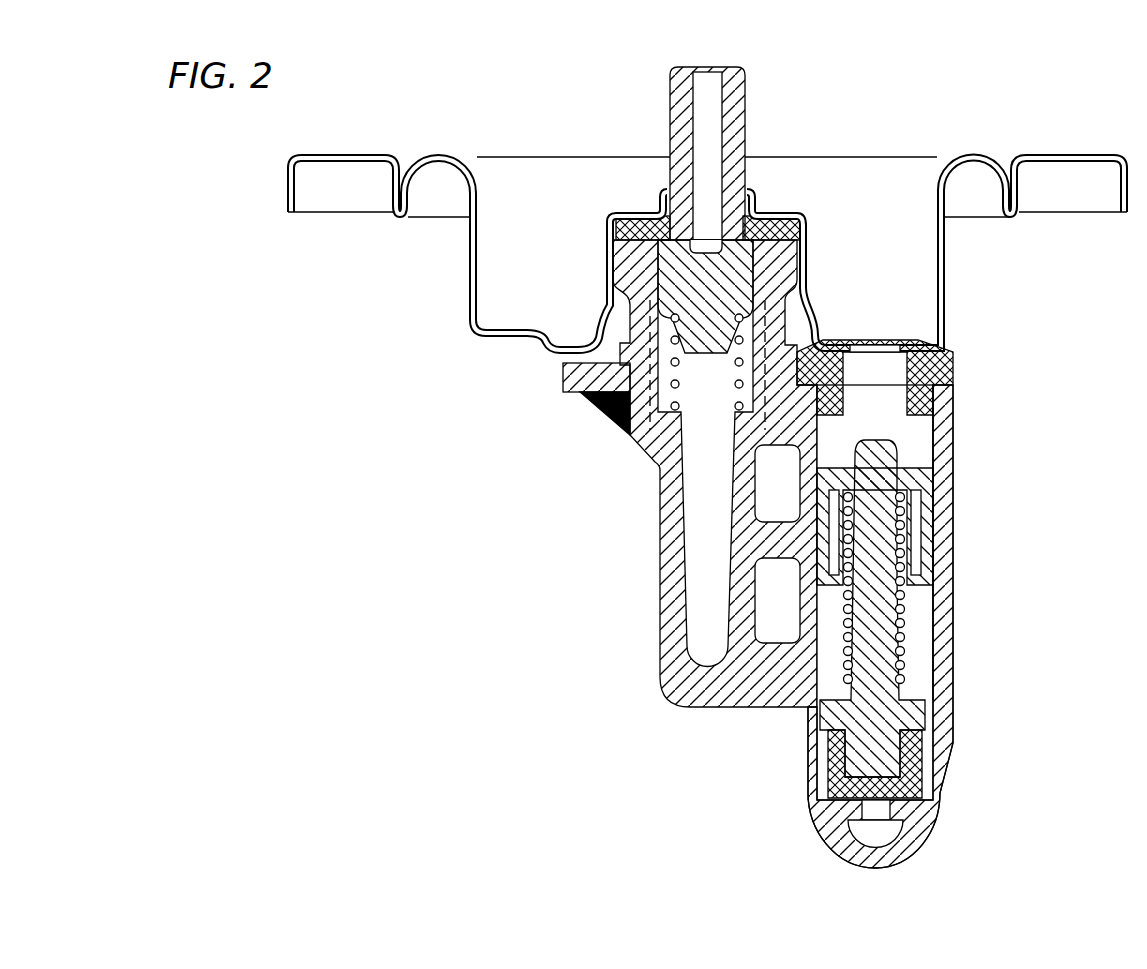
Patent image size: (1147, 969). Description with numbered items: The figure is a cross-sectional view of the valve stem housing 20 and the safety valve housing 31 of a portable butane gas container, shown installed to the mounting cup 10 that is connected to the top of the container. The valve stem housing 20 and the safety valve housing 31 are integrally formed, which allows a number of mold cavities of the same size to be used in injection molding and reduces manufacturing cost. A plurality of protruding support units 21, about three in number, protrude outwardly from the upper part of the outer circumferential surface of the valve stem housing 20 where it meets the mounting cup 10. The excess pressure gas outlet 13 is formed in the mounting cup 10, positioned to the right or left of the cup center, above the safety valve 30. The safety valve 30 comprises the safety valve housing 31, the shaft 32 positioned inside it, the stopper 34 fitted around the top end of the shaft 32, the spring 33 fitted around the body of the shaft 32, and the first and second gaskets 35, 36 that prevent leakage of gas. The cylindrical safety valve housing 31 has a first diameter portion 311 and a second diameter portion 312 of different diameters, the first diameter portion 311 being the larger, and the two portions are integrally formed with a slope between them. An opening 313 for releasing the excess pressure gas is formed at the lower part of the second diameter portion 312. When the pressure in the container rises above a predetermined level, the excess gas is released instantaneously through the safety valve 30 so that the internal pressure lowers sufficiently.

The mounting cup 10 is at (438, 157).
The excess pressure gas outlet 13 is at (873, 345).
The valve stem housing 20 is at (634, 518).
The protruding support unit 21 is at (565, 376).
The safety valve 30 is at (1046, 460).
The safety valve housing 31 is at (955, 633).
The first diameter portion 311 is at (945, 450).
The second diameter portion 312 is at (933, 760).
The opening 313 is at (875, 812).
The shaft 32 is at (883, 660).
The spring 33 is at (905, 616).
The stopper 34 is at (925, 503).
The first gasket 35 is at (953, 365).
The second gasket 36 is at (835, 782).